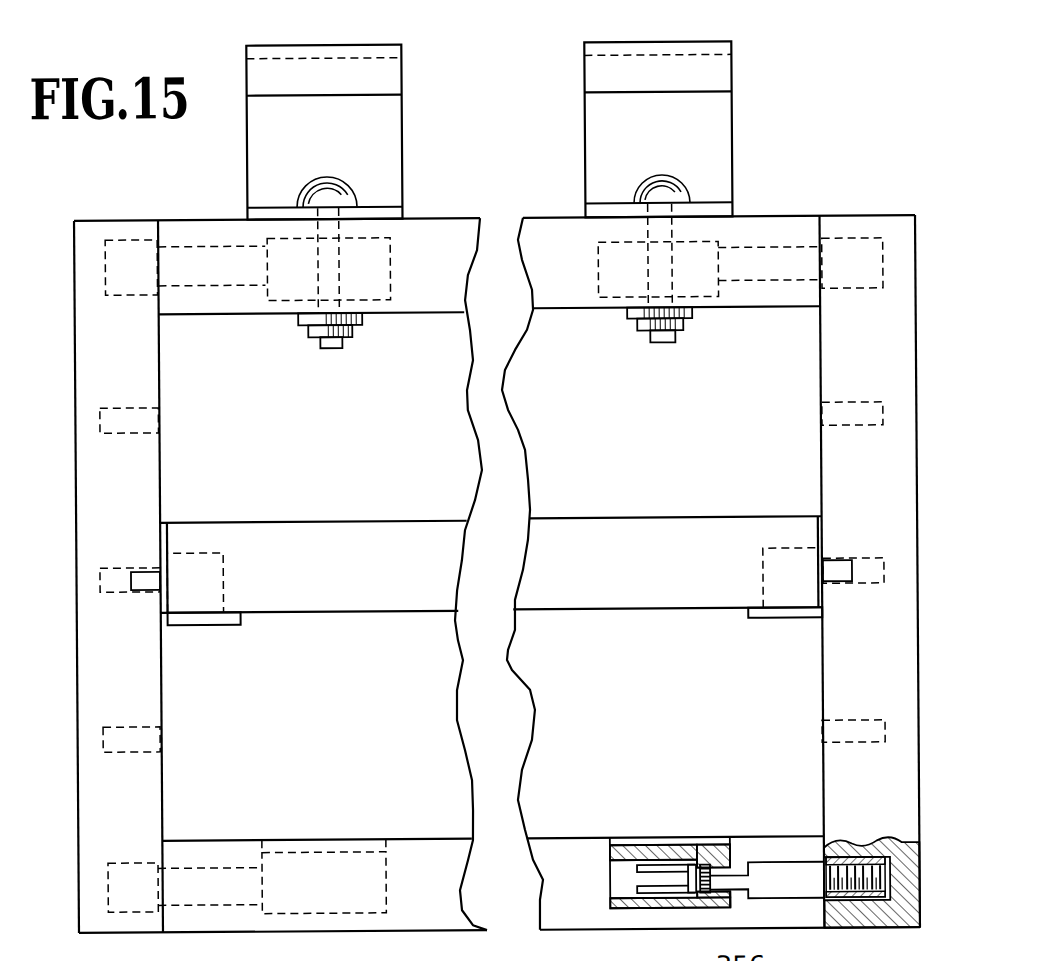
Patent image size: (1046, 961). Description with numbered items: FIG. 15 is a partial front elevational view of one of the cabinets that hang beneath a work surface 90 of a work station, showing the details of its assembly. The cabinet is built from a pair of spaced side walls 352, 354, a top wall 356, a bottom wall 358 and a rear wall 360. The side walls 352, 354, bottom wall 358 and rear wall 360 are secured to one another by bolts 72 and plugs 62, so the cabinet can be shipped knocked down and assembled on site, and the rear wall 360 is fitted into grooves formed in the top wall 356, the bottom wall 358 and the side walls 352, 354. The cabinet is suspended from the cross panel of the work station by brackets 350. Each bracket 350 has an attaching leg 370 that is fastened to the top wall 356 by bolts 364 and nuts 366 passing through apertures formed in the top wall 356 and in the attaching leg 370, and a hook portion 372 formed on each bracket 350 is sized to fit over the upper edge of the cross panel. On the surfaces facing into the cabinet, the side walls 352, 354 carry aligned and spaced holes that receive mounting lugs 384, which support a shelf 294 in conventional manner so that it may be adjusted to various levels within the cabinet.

The plug 62 is at (898, 858).
The bolt 72 is at (700, 866).
The work surface 90 is at (865, 225).
The shelf 294 is at (325, 580).
The bracket 350 is at (393, 139).
The side wall 352 is at (898, 920).
The side wall 354 is at (146, 810).
The top wall 356 is at (762, 230).
The bottom wall 358 is at (656, 924).
The rear wall 360 is at (410, 490).
The bolt 364 is at (680, 196).
The nut 366 is at (664, 344).
The attaching leg 370 is at (402, 211).
The hook portion 372 is at (406, 76).
The mounting lug 384 is at (203, 625).